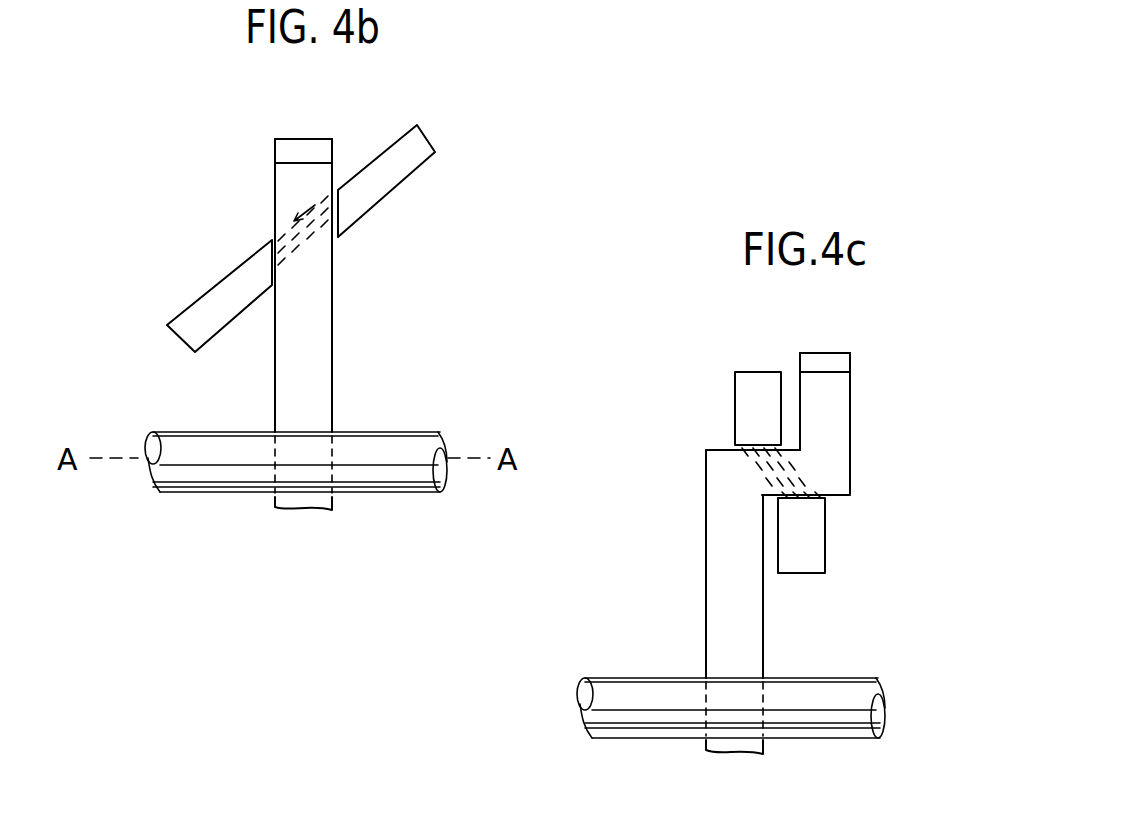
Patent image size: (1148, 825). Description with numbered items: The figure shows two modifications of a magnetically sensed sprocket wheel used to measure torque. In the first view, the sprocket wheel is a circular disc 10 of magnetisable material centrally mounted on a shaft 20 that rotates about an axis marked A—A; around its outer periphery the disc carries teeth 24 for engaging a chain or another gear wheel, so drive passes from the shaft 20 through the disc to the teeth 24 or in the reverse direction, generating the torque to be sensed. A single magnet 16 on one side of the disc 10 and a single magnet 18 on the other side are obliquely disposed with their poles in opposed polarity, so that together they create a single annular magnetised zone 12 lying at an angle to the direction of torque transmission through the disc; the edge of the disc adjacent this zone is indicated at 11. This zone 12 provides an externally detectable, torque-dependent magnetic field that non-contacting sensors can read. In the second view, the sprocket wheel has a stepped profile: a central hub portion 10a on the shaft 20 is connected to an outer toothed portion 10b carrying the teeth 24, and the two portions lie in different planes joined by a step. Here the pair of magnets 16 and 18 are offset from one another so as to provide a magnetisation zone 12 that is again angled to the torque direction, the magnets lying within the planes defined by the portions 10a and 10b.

In FIG. 4b, the circular disc 10 is at (318, 316).
In FIG. 4c, the central hub portion 10a is at (712, 622).
In FIG. 4c, the outer toothed portion 10b is at (836, 400).
In FIG. 4b, the beam edge 11 is at (275, 389).
In FIG. 4b, the magnetised zone 12 is at (313, 237).
In FIG. 4c, the magnetised zone 12 is at (805, 478).
In FIG. 4b, the magnet 16 is at (232, 291).
In FIG. 4c, the magnet 16 is at (735, 405).
In FIG. 4b, the magnet 18 is at (392, 178).
In FIG. 4c, the magnet 18 is at (918, 533).
In FIG. 4b, the shaft 20 is at (372, 445).
In FIG. 4c, the shaft 20 is at (853, 690).
In FIG. 4b, the teeth 24 is at (310, 139).
In FIG. 4c, the teeth 24 is at (820, 353).